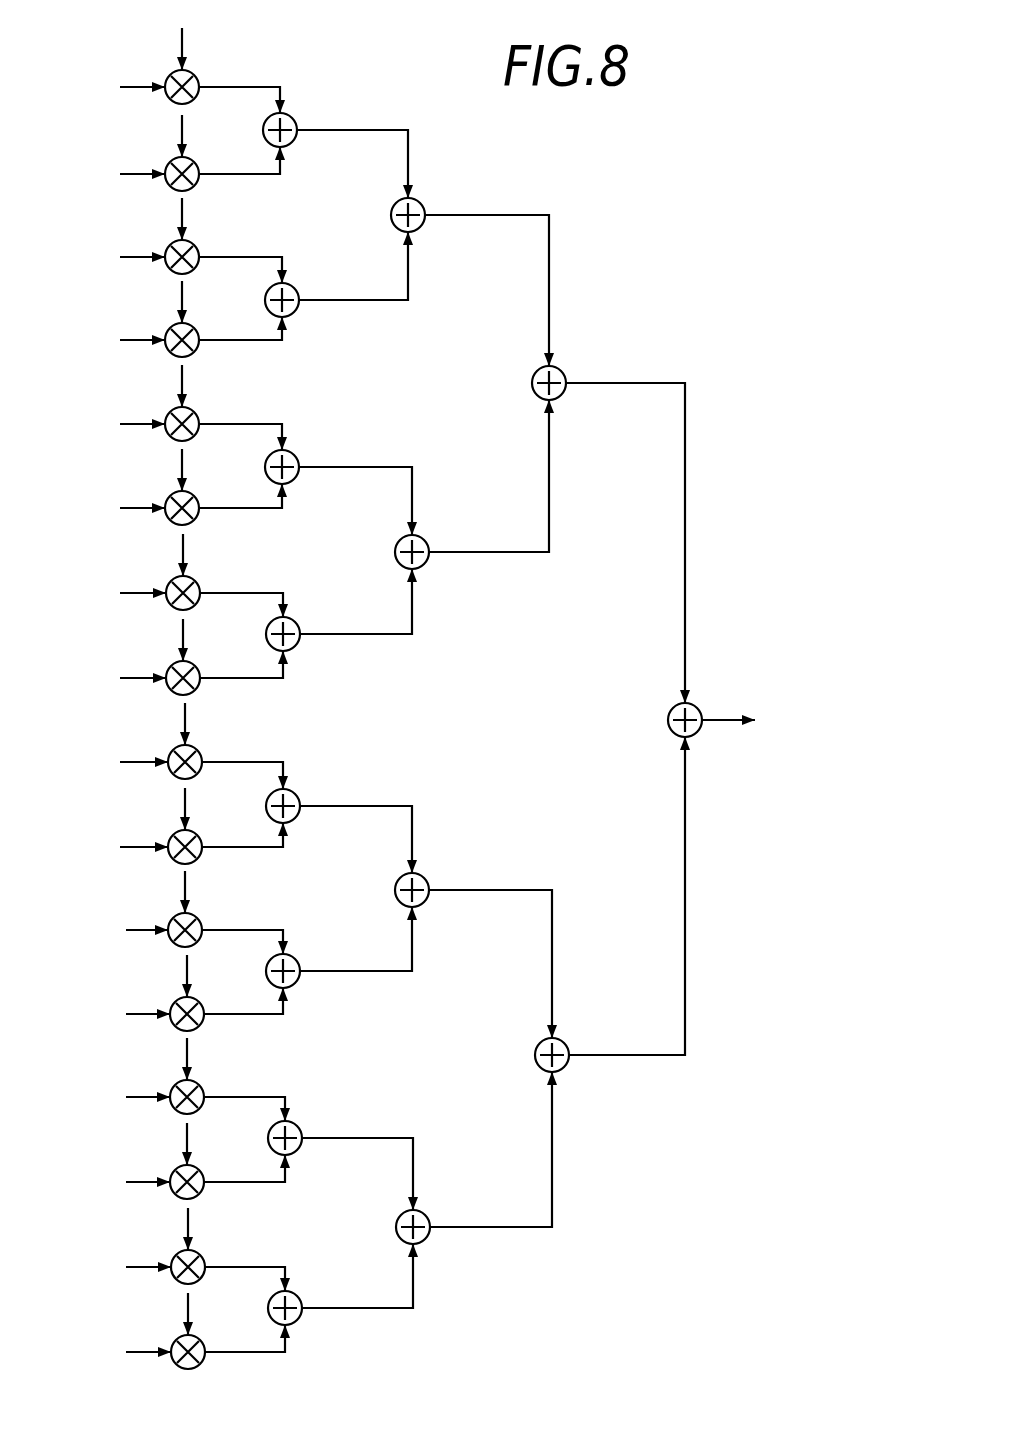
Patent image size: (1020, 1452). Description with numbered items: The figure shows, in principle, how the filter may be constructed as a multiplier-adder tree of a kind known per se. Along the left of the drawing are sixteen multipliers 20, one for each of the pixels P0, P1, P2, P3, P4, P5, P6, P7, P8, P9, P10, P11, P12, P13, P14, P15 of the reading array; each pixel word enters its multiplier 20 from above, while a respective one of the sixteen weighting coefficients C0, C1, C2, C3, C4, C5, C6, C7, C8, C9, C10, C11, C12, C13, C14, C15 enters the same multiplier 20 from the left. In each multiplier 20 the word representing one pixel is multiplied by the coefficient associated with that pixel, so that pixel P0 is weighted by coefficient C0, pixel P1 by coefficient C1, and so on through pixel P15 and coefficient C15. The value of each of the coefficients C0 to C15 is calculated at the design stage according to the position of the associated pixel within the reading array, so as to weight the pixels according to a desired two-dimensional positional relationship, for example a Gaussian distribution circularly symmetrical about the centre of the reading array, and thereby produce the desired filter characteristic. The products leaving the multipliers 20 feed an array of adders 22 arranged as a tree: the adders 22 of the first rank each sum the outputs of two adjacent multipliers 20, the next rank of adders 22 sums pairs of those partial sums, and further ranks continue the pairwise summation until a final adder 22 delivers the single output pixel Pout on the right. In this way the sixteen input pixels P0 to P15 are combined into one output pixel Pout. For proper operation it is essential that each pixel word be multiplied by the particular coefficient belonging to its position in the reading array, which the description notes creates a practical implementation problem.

The multiplier 20 is at (154, 719).
The adder 22 is at (482, 719).
The output pixel Pout is at (760, 720).
The weighting coefficient C0 is at (126, 87).
The weighting coefficient C1 is at (126, 174).
The weighting coefficient C2 is at (126, 257).
The weighting coefficient C3 is at (126, 340).
The weighting coefficient C4 is at (126, 424).
The weighting coefficient C5 is at (126, 508).
The weighting coefficient C6 is at (126, 593).
The weighting coefficient C7 is at (126, 678).
The weighting coefficient C8 is at (127, 762).
The weighting coefficient C9 is at (127, 847).
The weighting coefficient C10 is at (126, 930).
The weighting coefficient C11 is at (127, 1014).
The weighting coefficient C12 is at (127, 1097).
The weighting coefficient C13 is at (127, 1182).
The weighting coefficient C14 is at (128, 1267).
The weighting coefficient C15 is at (128, 1352).
The pixel P0 is at (197, 37).
The pixel P1 is at (197, 135).
The pixel P2 is at (197, 218).
The pixel P3 is at (197, 301).
The pixel P4 is at (197, 385).
The pixel P5 is at (197, 469).
The pixel P6 is at (198, 554).
The pixel P7 is at (198, 639).
The pixel P8 is at (200, 723).
The pixel P9 is at (200, 808).
The pixel P10 is at (206, 891).
The pixel P11 is at (208, 975).
The pixel P12 is at (208, 1058).
The pixel P13 is at (208, 1143).
The pixel P14 is at (209, 1228).
The pixel P15 is at (209, 1313).